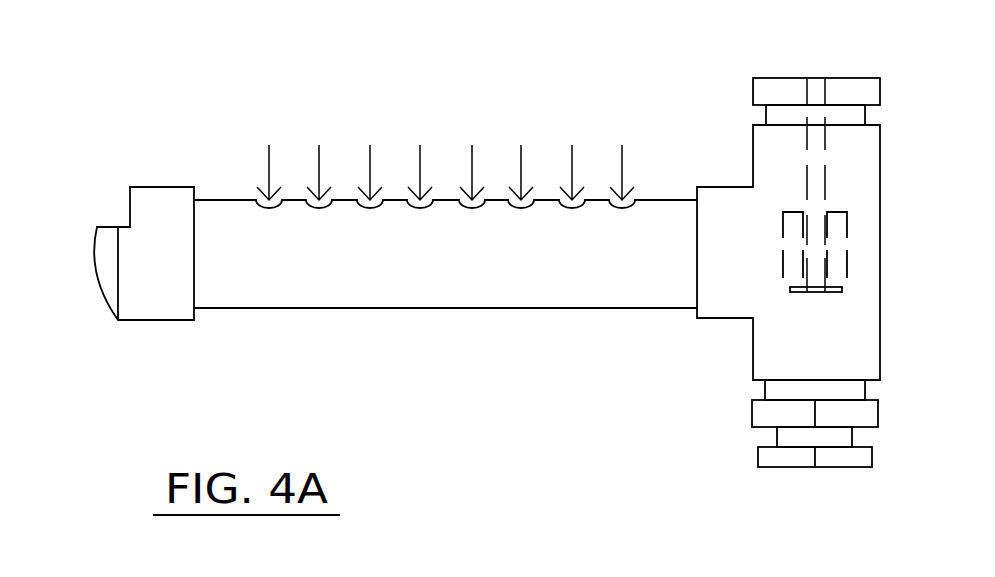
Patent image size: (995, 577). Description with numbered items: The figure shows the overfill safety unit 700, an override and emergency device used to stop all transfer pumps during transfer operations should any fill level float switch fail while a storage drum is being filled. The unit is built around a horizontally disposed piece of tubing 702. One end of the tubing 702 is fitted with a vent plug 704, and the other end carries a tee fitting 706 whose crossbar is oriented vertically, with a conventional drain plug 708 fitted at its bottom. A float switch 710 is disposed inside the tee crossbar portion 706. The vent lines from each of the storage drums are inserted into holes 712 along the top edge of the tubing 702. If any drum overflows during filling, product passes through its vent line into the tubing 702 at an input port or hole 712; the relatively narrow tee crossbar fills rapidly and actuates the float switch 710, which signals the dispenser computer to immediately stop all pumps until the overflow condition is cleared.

The overfill safety unit 700 is at (80, 393).
The tubing 702 is at (480, 287).
The vent plug 704 is at (130, 288).
The tee fitting 706 is at (845, 358).
The drain plug 708 is at (758, 458).
The float switch 710 is at (783, 277).
The holes 712 is at (446, 138).